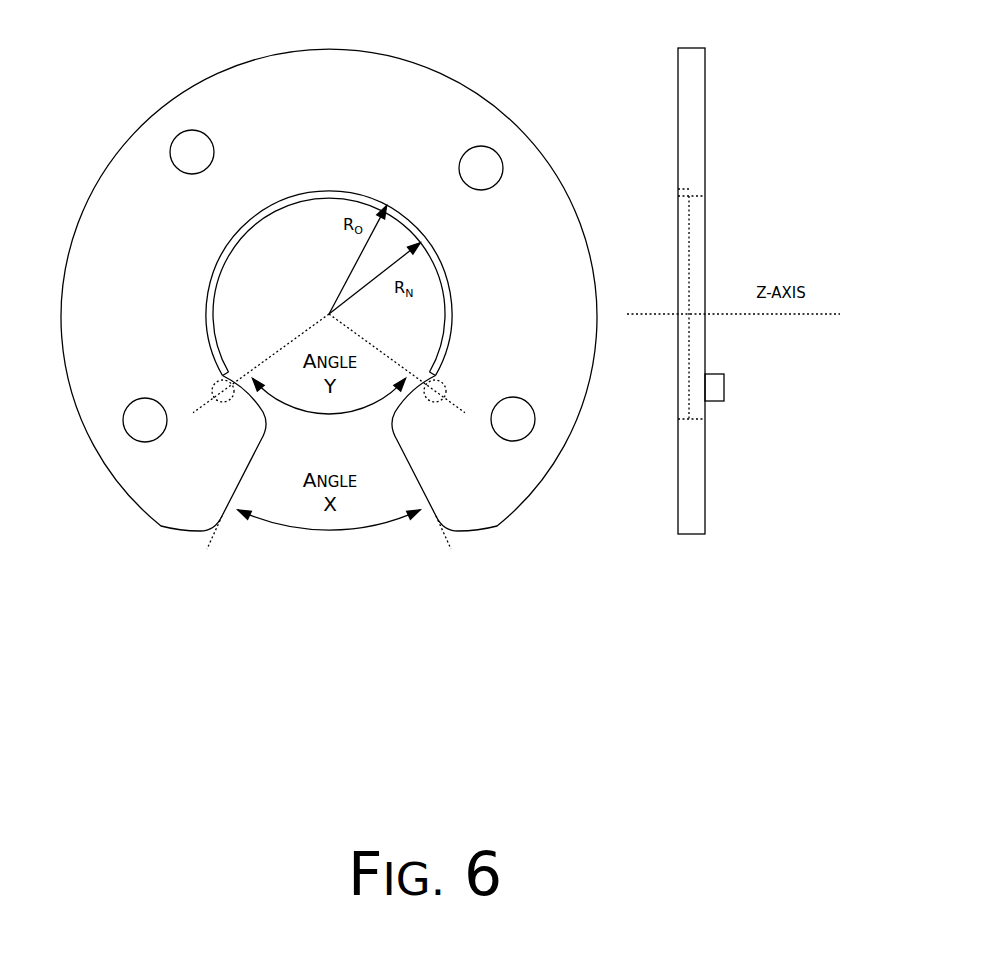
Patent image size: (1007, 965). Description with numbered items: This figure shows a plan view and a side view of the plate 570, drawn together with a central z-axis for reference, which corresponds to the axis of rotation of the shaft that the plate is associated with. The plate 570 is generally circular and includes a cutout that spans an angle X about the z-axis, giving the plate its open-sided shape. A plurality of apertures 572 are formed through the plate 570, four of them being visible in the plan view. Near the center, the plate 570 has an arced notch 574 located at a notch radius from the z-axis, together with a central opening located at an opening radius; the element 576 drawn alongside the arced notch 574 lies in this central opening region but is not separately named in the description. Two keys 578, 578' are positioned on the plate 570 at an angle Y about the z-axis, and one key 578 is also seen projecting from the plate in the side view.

The plate 570 is at (383, 270).
The apertures 572 is at (312, 268).
The arced notch 574 is at (409, 261).
The inner arcuate edge of central opening 576 is at (442, 288).
The key 578 is at (464, 372).
The key 578' is at (470, 376).